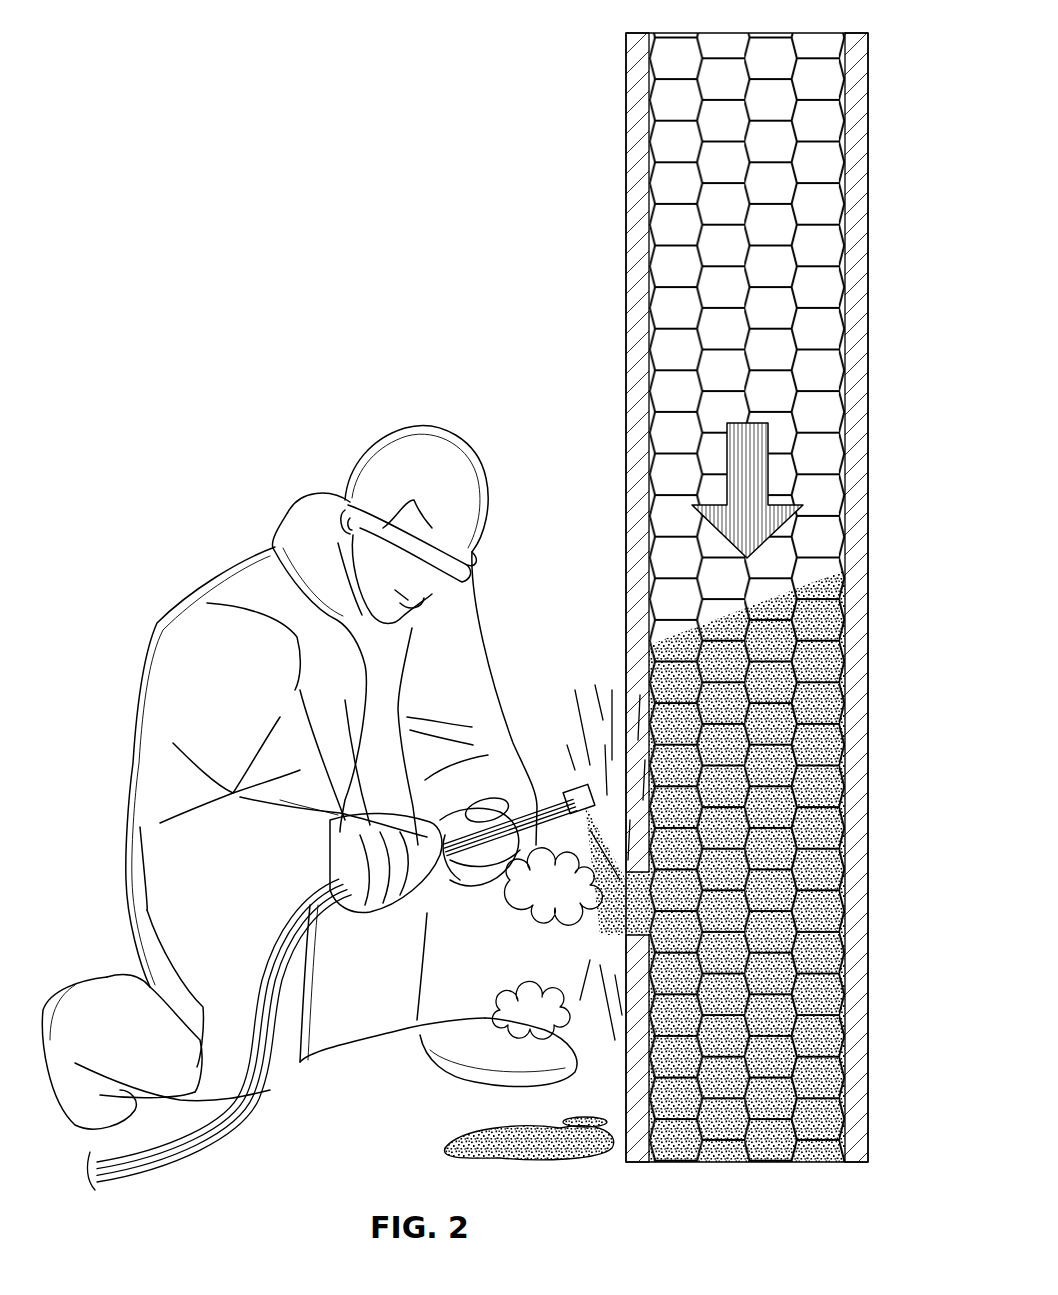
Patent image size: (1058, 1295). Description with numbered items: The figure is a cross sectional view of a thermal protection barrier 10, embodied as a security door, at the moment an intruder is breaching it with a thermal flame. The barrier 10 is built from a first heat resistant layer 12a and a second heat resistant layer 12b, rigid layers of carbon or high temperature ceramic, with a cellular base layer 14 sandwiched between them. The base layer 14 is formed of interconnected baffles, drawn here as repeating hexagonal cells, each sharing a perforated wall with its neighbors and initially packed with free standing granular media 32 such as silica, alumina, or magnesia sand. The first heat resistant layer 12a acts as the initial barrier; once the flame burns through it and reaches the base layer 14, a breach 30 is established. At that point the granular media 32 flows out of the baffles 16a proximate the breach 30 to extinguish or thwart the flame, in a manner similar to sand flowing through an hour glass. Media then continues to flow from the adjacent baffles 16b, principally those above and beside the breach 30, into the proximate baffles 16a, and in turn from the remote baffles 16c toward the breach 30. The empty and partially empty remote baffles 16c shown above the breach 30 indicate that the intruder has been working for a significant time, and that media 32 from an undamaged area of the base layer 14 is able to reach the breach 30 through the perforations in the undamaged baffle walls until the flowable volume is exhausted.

The thermal protection barrier 10 is at (526, 139).
The first heat resistant layer 12a is at (637, 88).
The second heat resistant layer 12b is at (855, 63).
The cellular base layer 14 is at (751, 625).
The baffles proximate the breach 16a is at (684, 881).
The adjacent baffles 16b is at (680, 840).
The remote baffles 16c is at (806, 597).
The breach 30 is at (663, 893).
The granular media 32 is at (623, 925).